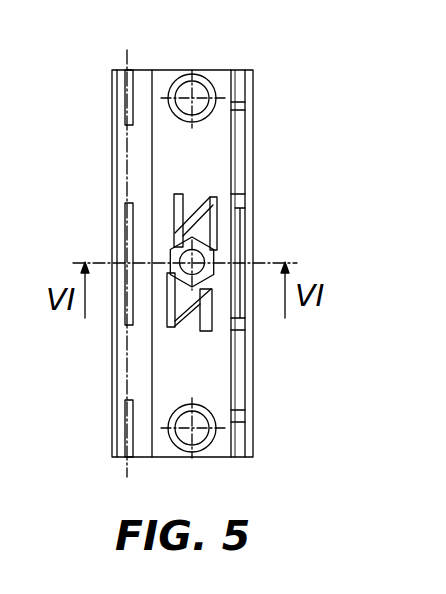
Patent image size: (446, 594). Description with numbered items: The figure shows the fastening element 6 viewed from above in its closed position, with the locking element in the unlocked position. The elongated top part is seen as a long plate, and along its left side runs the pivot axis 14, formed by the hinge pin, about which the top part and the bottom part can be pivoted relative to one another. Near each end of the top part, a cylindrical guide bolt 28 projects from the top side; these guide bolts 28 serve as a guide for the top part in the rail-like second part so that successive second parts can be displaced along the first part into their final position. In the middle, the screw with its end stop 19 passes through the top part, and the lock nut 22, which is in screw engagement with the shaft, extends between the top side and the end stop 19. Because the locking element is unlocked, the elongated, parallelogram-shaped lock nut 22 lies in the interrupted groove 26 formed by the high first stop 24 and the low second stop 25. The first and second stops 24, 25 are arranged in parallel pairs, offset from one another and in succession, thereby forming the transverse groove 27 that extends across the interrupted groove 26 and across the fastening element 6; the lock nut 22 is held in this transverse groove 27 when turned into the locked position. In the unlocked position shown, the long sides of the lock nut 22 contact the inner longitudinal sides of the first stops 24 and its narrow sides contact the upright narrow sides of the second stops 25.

The fastening element 6 is at (223, 390).
The pivot axis 14 is at (127, 57).
The end stop 19 is at (214, 258).
The lock nut 22 is at (212, 228).
The first stop 24 is at (168, 326).
The second stop 25 is at (213, 328).
The interrupted groove 26 is at (195, 199).
The transverse groove 27 is at (173, 248).
The guide bolts 28 is at (203, 72).